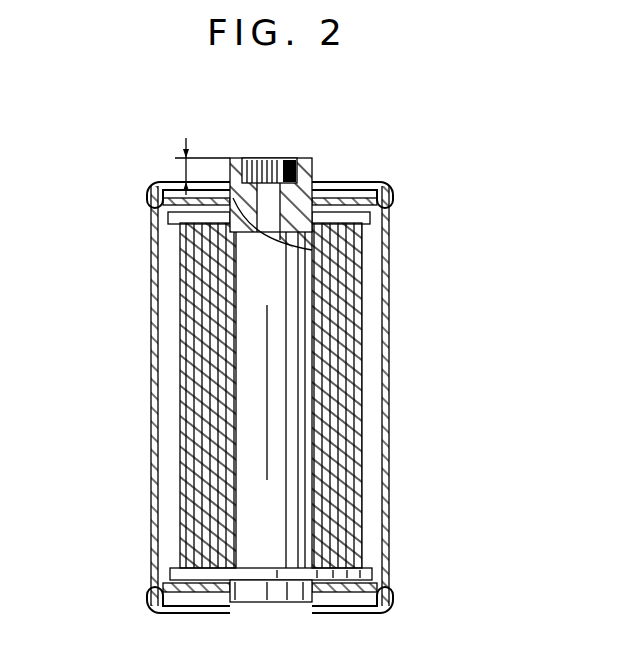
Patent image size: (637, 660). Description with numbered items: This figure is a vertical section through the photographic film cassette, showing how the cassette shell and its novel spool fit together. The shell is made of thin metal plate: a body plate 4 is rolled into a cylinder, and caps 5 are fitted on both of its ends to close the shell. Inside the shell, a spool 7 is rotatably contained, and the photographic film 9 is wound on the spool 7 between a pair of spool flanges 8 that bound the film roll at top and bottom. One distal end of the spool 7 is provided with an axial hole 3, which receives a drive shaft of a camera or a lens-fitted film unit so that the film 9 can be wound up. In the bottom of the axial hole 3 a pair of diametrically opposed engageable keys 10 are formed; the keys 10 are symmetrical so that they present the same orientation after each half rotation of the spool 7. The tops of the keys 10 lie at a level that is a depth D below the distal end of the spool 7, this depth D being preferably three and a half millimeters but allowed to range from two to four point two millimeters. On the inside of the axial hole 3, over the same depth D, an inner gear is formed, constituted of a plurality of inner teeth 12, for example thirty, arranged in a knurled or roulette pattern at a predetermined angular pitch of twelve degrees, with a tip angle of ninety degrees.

The axial hole 3 is at (283, 157).
The body plate 4 is at (150, 380).
The caps 5 is at (143, 201).
The spool 7 is at (318, 168).
The spool flanges 8 is at (367, 216).
The photographic film 9 is at (360, 435).
The engageable keys 10 is at (268, 222).
The inner teeth 12 is at (258, 157).
The depth D is at (183, 168).